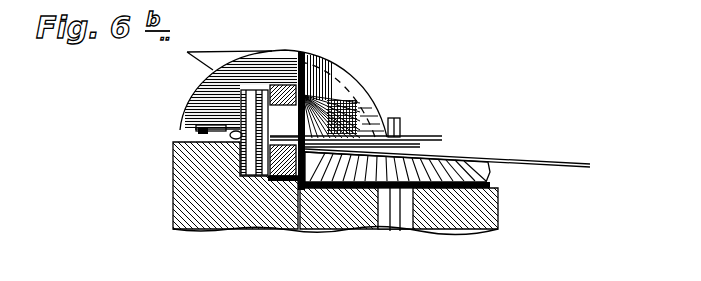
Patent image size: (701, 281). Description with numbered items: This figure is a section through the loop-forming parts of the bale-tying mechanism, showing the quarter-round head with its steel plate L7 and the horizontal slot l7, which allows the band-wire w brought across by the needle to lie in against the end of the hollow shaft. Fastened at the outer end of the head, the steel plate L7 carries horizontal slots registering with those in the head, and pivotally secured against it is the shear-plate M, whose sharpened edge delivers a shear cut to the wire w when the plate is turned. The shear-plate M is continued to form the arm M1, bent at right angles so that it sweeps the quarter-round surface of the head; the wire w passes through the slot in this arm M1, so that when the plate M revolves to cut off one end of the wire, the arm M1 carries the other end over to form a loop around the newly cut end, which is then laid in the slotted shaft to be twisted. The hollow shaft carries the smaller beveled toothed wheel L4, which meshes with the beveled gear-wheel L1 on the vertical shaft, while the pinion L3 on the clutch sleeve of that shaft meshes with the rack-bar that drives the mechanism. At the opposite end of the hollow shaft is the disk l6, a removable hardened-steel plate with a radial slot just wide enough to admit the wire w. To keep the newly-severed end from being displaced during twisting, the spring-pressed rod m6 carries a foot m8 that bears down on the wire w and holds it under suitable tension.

The beveled toothed wheel L4 is at (323, 95).
The spring-pressed rod m6 is at (212, 70).
The shear-plate M is at (232, 56).
The steel plate L7 is at (266, 73).
The pinion L3 is at (284, 130).
The disk l6 is at (243, 153).
The band-wire w is at (243, 146).
The slot l7 is at (192, 127).
The foot m8 is at (200, 128).
The arm M1 is at (402, 124).
The beveled gear-wheel L1 is at (477, 168).